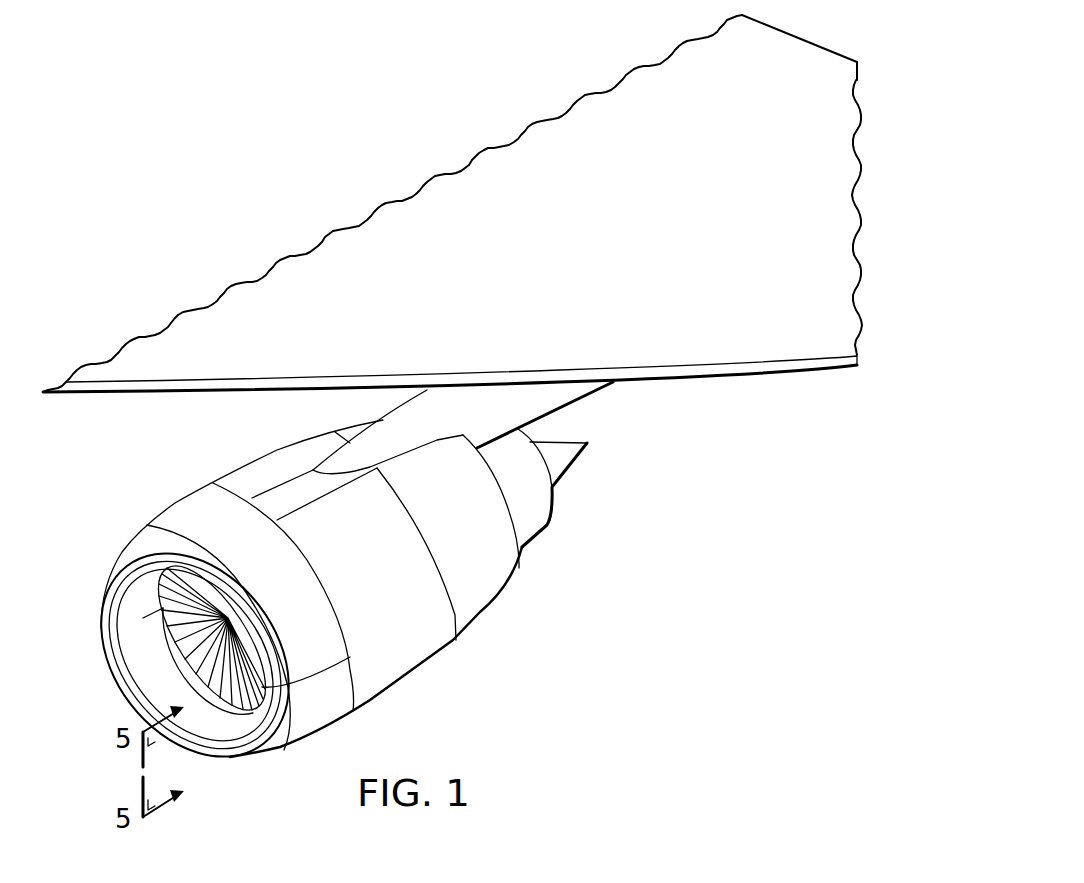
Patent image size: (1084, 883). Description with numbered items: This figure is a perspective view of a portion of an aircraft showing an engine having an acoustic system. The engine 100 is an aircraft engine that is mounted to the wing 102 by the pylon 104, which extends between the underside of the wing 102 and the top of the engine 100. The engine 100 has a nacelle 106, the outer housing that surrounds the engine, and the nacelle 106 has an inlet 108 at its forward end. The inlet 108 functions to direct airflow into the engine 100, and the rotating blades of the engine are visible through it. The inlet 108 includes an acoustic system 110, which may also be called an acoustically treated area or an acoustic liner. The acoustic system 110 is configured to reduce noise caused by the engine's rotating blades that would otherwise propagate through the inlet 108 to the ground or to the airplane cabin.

The engine 100 is at (158, 464).
The wing 102 is at (418, 189).
The pylon 104 is at (562, 406).
The nacelle 106 is at (403, 655).
The inlet 108 is at (128, 637).
The acoustic system 110 is at (207, 727).